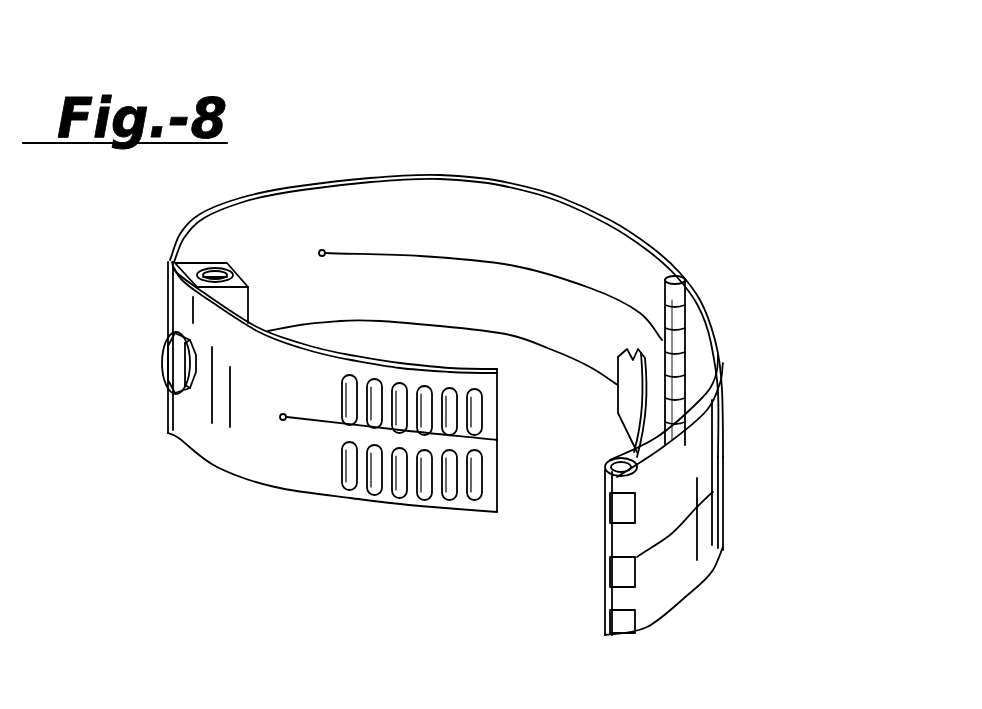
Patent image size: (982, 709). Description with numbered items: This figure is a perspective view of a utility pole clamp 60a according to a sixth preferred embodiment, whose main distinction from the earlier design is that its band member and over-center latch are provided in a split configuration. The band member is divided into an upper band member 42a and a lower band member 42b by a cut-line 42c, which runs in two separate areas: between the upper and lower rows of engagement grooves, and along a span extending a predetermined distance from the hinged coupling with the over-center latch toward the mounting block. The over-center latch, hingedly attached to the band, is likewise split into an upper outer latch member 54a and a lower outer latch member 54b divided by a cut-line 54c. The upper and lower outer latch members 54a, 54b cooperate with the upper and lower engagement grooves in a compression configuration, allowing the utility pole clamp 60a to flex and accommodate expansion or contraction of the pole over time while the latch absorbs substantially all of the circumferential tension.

The utility pole clamp 60a is at (587, 193).
The upper band member 42a is at (628, 222).
The lower band member 42b is at (275, 487).
The cut-line 42c is at (475, 255).
The upper outer latch member 54a is at (727, 360).
The lower outer latch member 54b is at (720, 552).
The cut-line 54c is at (697, 510).